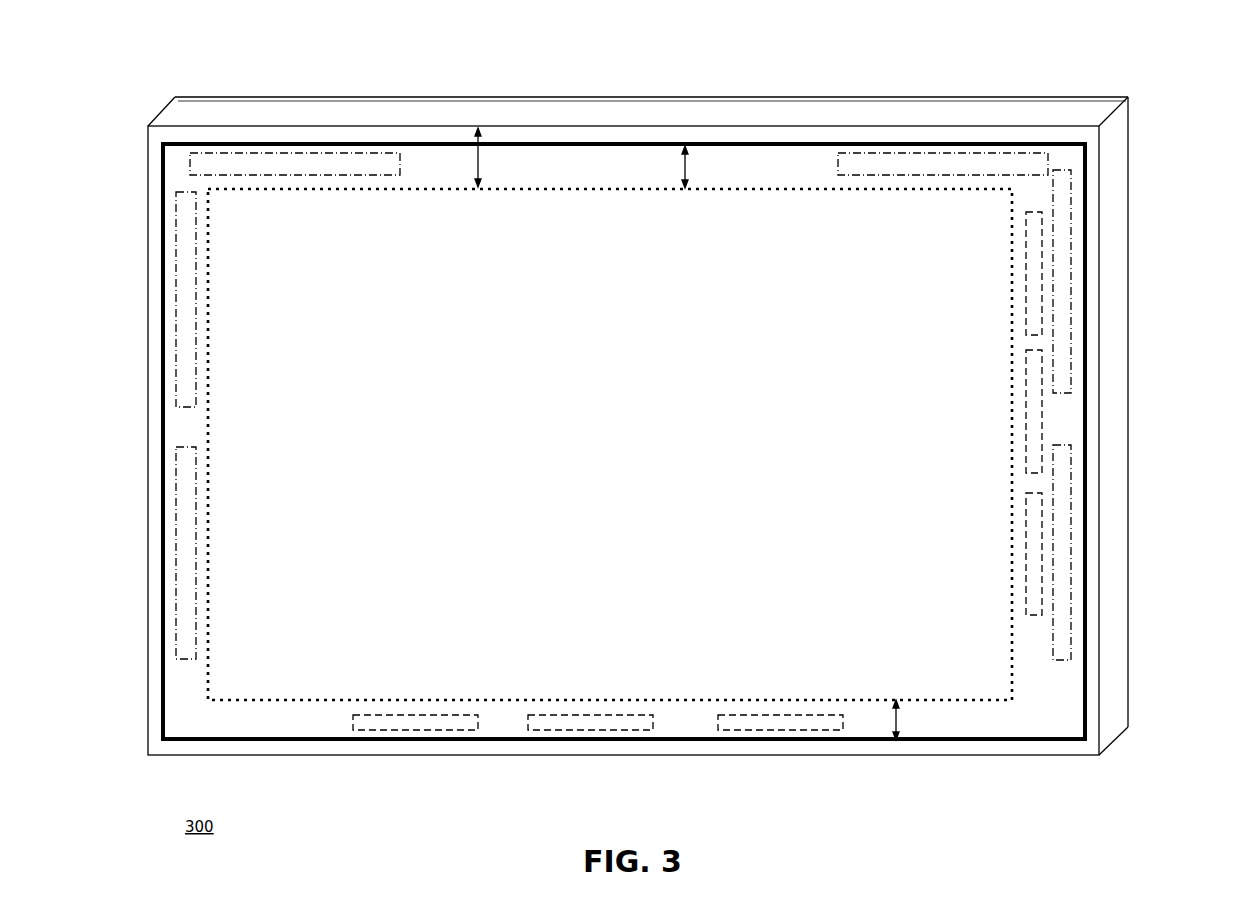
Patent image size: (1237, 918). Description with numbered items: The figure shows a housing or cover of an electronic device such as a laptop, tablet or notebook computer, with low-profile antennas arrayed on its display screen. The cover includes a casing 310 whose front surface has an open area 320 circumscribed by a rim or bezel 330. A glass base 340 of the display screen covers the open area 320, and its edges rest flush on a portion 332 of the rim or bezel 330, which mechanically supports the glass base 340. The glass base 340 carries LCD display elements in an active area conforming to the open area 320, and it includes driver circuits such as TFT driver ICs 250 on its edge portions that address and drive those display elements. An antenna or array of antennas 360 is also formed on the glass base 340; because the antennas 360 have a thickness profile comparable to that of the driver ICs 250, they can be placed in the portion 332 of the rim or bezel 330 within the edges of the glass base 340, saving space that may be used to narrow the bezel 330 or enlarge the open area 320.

The casing 310 is at (153, 123).
The open area 320 is at (420, 188).
The rim or bezel 330 is at (480, 157).
The portion of rim or bezel 332 is at (687, 177).
The glass base 340 is at (600, 144).
The antennas 360 is at (922, 157).
The TFT driver ICs 250 is at (1033, 440).